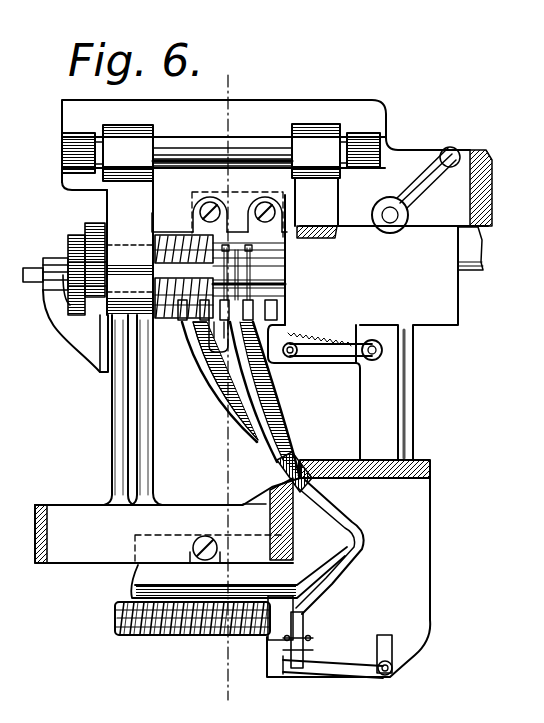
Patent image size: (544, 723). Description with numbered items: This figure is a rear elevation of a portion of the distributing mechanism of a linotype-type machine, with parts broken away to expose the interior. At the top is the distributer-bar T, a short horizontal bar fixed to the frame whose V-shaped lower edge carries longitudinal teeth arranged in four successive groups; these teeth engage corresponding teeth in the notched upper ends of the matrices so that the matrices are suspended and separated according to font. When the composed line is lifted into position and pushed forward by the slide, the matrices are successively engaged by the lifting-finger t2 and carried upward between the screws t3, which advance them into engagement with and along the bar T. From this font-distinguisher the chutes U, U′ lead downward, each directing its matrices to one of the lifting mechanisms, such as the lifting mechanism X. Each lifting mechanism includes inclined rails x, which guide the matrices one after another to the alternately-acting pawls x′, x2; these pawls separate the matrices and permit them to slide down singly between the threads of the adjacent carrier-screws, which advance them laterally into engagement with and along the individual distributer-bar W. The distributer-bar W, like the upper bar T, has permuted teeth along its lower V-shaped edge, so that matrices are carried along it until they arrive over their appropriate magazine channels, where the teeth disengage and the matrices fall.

The distributer-bar T is at (237, 237).
The screws t3 is at (176, 233).
The lifting-finger t2 is at (284, 344).
The chute U′ is at (216, 392).
The chute U is at (251, 413).
The inclined rails x is at (324, 538).
The lifting mechanism X is at (336, 568).
The pawl x2 is at (305, 625).
The pawl x′ is at (297, 622).
The distributer-bar W is at (167, 636).